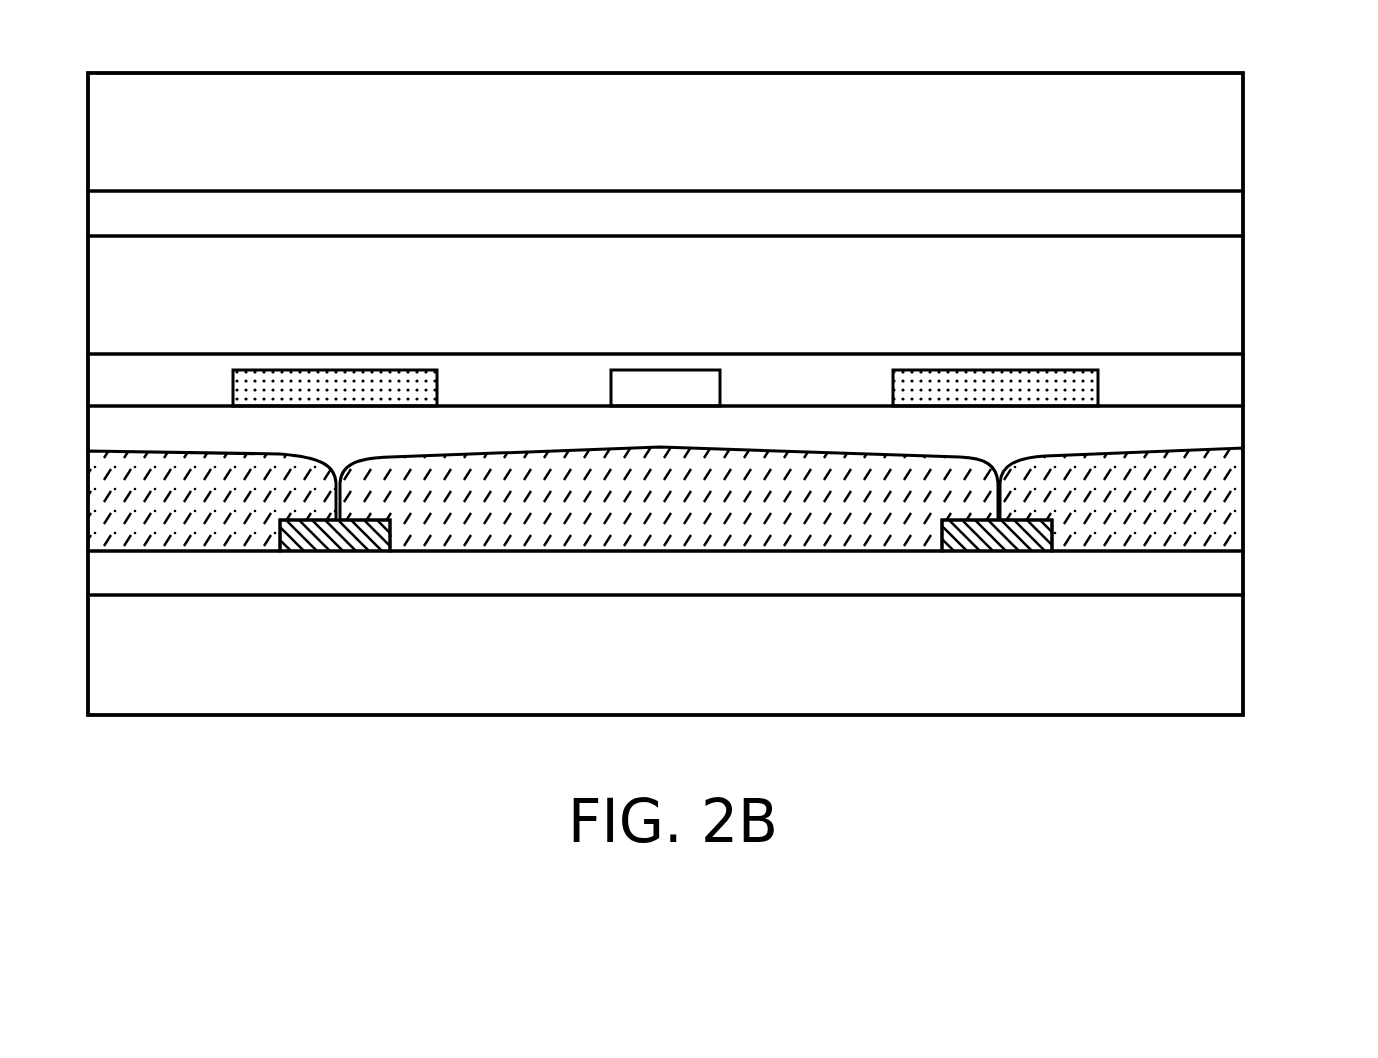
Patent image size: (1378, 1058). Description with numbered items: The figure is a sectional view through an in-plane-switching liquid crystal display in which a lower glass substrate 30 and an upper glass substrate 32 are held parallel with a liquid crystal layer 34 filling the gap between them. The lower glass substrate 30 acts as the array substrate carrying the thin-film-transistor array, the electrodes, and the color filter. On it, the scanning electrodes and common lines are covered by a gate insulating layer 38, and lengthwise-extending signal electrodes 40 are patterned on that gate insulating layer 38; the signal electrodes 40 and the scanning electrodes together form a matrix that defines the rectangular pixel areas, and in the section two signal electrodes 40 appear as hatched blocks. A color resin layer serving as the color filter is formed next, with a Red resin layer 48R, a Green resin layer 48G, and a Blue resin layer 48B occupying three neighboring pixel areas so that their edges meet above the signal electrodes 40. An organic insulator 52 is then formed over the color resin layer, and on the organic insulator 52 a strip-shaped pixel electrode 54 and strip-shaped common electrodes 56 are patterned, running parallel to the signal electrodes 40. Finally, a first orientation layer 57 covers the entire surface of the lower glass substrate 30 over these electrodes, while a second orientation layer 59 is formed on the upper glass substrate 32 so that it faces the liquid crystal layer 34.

The lower glass substrate 30 is at (1222, 658).
The upper glass substrate 32 is at (1222, 161).
The liquid crystal layer 34 is at (1222, 300).
The gate insulating layer 38 is at (1222, 573).
The signal electrode 40 is at (337, 552).
The Red resin layer 48R is at (168, 518).
The Green resin layer 48G is at (663, 520).
The Blue resin layer 48B is at (1222, 503).
The organic insulator 52 is at (1222, 430).
The pixel electrode 54 is at (667, 380).
The common electrode 56 is at (337, 380).
The first orientation layer 57 is at (1222, 375).
The second orientation layer 59 is at (1222, 216).